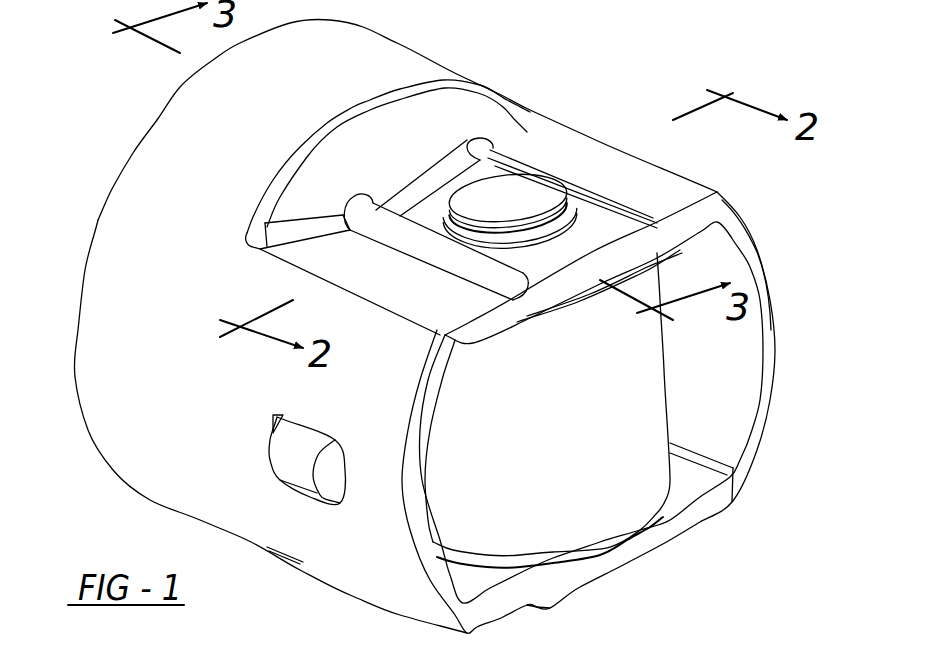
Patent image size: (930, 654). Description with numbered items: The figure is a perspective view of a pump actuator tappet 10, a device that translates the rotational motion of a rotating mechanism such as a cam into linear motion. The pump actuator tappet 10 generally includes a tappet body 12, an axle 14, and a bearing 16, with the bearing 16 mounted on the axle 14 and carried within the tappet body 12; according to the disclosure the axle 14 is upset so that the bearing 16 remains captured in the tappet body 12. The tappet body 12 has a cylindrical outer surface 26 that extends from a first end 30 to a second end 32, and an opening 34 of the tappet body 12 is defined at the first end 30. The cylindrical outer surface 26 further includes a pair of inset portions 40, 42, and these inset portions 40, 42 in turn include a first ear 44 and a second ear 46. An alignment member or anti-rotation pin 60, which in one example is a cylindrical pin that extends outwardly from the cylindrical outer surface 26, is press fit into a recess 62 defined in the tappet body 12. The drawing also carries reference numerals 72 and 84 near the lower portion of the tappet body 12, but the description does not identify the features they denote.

The pump actuator tappet 10 is at (675, 72).
The tappet body 12 is at (147, 278).
The axle 14 is at (523, 200).
The bearing 16 is at (597, 440).
The cylindrical outer surface 26 is at (190, 393).
The first end 30 is at (760, 262).
The second end 32 is at (163, 107).
The opening 34 is at (735, 353).
The inset portion 40 is at (325, 177).
The inset portion 42 is at (303, 565).
The first ear 44 is at (613, 200).
The second ear 46 is at (550, 607).
The alignment member or anti-rotation pin 60 is at (297, 453).
The recess 62 is at (328, 480).
The lower feature 72 is at (515, 652).
The bottom feature 84 is at (395, 645).